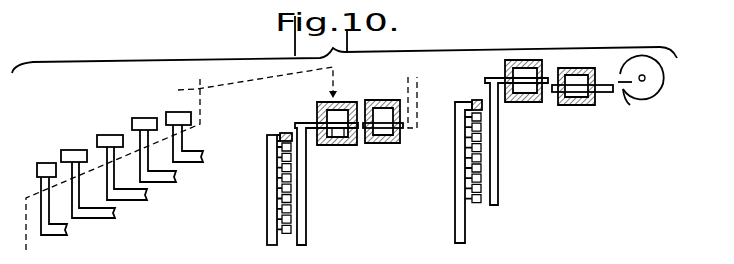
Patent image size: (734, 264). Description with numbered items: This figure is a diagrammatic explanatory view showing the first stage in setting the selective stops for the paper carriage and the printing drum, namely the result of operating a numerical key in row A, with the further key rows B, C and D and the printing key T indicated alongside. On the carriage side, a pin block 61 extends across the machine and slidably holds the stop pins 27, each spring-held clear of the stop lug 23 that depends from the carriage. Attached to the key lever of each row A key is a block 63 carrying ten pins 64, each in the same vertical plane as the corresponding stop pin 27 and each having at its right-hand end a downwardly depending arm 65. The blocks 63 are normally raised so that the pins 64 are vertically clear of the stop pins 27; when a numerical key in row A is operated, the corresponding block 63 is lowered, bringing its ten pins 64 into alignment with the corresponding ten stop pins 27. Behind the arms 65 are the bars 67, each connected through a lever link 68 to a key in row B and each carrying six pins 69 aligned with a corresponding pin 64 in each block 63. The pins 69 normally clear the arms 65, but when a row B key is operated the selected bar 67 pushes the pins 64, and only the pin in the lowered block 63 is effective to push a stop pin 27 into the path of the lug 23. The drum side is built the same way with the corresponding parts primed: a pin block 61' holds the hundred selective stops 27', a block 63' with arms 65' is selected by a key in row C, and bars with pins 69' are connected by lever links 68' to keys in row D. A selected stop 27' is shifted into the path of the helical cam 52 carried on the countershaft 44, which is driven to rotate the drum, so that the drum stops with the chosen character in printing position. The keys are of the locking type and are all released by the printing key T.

The printing key T is at (52, 189).
The key row D is at (88, 170).
The key row C is at (122, 155).
The key row B is at (154, 137).
The key row A is at (184, 119).
The block 63 is at (324, 112).
The pin block 61 is at (382, 110).
The pin 64 is at (343, 128).
The arm 65 is at (326, 184).
The stop pin 27 is at (391, 143).
The bar 67 is at (279, 135).
The pin 69 is at (281, 121).
The lever link 68 is at (261, 190).
The stop lug 23 is at (417, 85).
The pin block 63' is at (504, 79).
The pin block 61' is at (576, 80).
The arm 65' is at (516, 141).
The selective stop 27' is at (582, 105).
The pin 69' is at (468, 96).
The lever link 68' is at (478, 172).
The helical cam 52 is at (641, 86).
The countershaft 44 is at (646, 81).